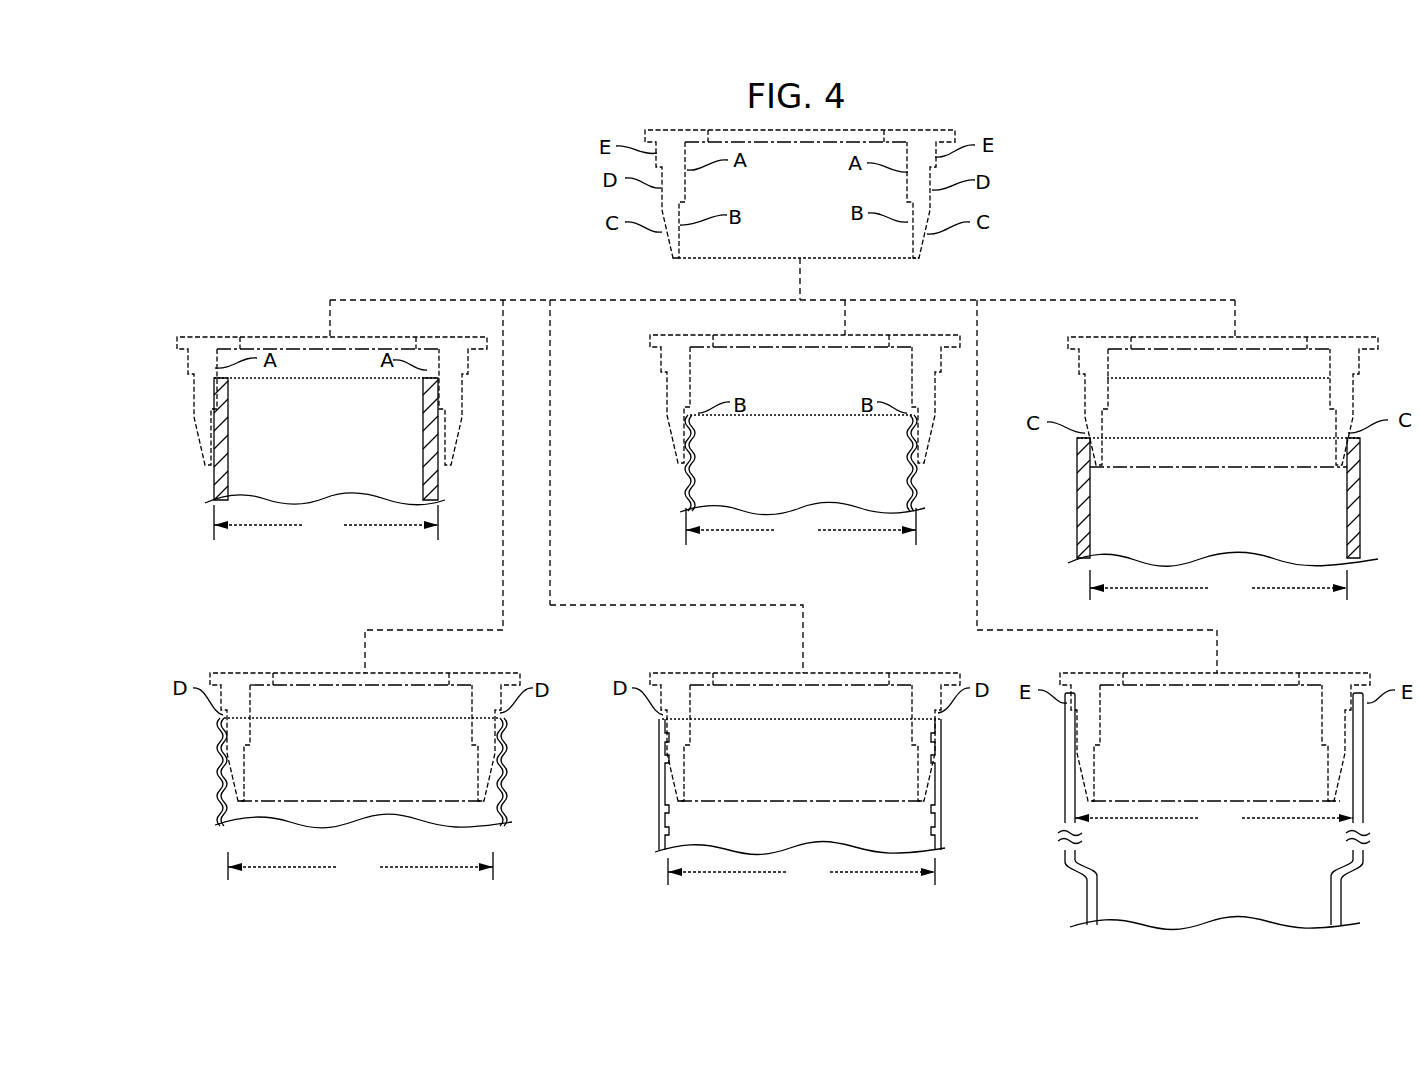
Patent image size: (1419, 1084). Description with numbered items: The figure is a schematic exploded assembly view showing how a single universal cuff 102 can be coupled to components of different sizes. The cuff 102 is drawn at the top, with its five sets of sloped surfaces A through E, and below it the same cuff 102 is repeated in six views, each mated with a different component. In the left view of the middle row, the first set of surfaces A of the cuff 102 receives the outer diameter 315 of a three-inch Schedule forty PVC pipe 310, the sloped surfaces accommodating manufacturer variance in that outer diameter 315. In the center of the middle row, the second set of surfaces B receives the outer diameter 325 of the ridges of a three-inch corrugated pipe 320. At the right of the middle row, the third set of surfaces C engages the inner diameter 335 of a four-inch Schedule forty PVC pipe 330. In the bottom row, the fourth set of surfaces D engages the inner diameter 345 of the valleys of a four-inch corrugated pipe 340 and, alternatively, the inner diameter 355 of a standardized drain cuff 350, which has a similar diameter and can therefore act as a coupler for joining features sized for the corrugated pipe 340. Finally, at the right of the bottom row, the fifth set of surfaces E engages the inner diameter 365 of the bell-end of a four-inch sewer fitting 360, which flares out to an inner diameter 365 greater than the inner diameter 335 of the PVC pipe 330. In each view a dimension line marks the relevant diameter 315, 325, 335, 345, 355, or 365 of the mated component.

The cuff 102 is at (574, 147).
The 3-inch Schedule 40 PVC pipe 310 is at (215, 490).
The outer diameter of the 3-inch Schedule 40 PVC pipe 315 is at (326, 522).
The 3-inch corrugated pipe 320 is at (685, 480).
The outer diameter of the 3-inch corrugated pipe 325 is at (801, 526).
The 4-inch Schedule 40 PVC pipe 330 is at (1075, 510).
The inner diameter of the 4-inch Schedule 40 PVC pipe 335 is at (1218, 585).
The 4-inch corrugated pipe 340 is at (218, 782).
The inner diameter of the 4-inch corrugated pipe 345 is at (360, 866).
The standardized drain cuff 350 is at (662, 790).
The inner diameter of the standardized drain cuff 355 is at (801, 871).
The 4-inch sewer fitting 360 is at (1063, 758).
The inner diameter of the 4-inch sewer fitting 365 is at (1214, 818).